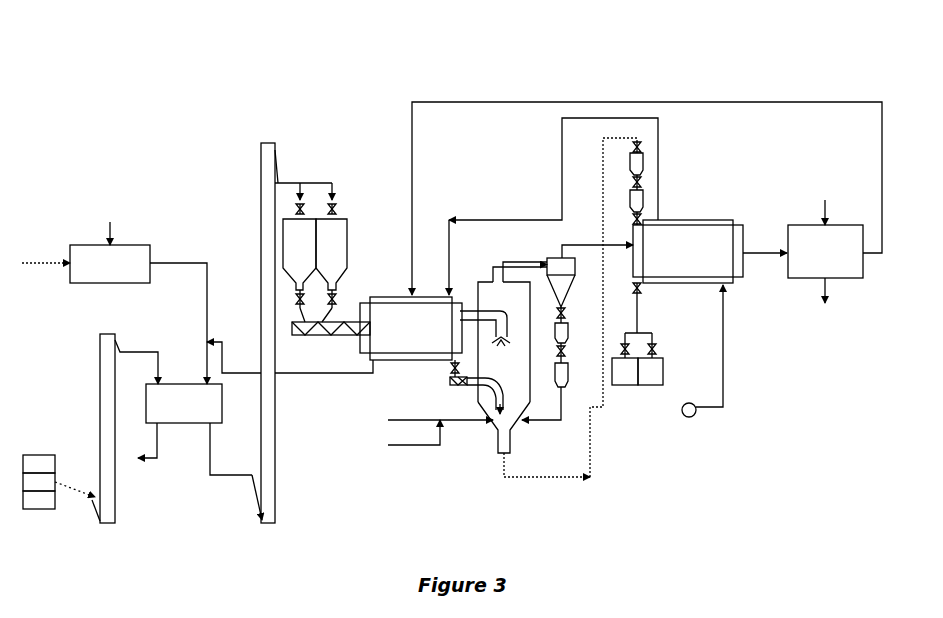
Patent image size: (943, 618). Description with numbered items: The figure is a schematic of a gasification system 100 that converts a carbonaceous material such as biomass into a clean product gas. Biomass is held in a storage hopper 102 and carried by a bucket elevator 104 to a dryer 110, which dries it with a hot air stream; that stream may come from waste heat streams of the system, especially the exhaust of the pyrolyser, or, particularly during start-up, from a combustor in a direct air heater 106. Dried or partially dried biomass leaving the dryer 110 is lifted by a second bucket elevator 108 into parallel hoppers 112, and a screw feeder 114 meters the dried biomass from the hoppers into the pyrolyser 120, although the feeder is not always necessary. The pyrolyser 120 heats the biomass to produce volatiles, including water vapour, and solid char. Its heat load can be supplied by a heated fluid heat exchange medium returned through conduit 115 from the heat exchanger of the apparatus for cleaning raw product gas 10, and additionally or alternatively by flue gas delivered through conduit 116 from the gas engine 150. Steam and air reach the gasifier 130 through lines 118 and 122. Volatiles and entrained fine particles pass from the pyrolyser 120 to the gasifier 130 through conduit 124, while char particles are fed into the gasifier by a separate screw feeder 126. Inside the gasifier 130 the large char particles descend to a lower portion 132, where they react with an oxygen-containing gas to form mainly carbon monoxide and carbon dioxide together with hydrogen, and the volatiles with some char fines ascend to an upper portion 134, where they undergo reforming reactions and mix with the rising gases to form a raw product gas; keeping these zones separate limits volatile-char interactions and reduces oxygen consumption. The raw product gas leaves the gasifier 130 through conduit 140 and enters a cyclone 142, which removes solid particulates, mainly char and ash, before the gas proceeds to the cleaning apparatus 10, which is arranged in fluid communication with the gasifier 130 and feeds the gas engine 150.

The gasification system 100 is at (90, 133).
The storage hopper 102 is at (38, 512).
The bucket elevator 104 is at (105, 525).
The direct air heater 106 is at (110, 285).
The bucket elevator 108 is at (259, 405).
The dryer 110 is at (190, 425).
The parallel hoppers 112 is at (348, 246).
The screw feeder 114 is at (332, 337).
The conduit 115 is at (658, 153).
The conduit 116 is at (413, 130).
The line 118 is at (413, 447).
The pyrolyser 120 is at (393, 297).
The line 122 is at (415, 418).
The conduit 124 is at (468, 310).
The screw feeder 126 is at (463, 388).
The gasifier 130 is at (492, 280).
The lower portion 132 is at (505, 427).
The upper portion 134 is at (523, 294).
The conduit 140 is at (540, 263).
The cyclone 142 is at (565, 280).
The apparatus for cleaning raw product gas 10 is at (672, 285).
The gas engine 150 is at (848, 278).